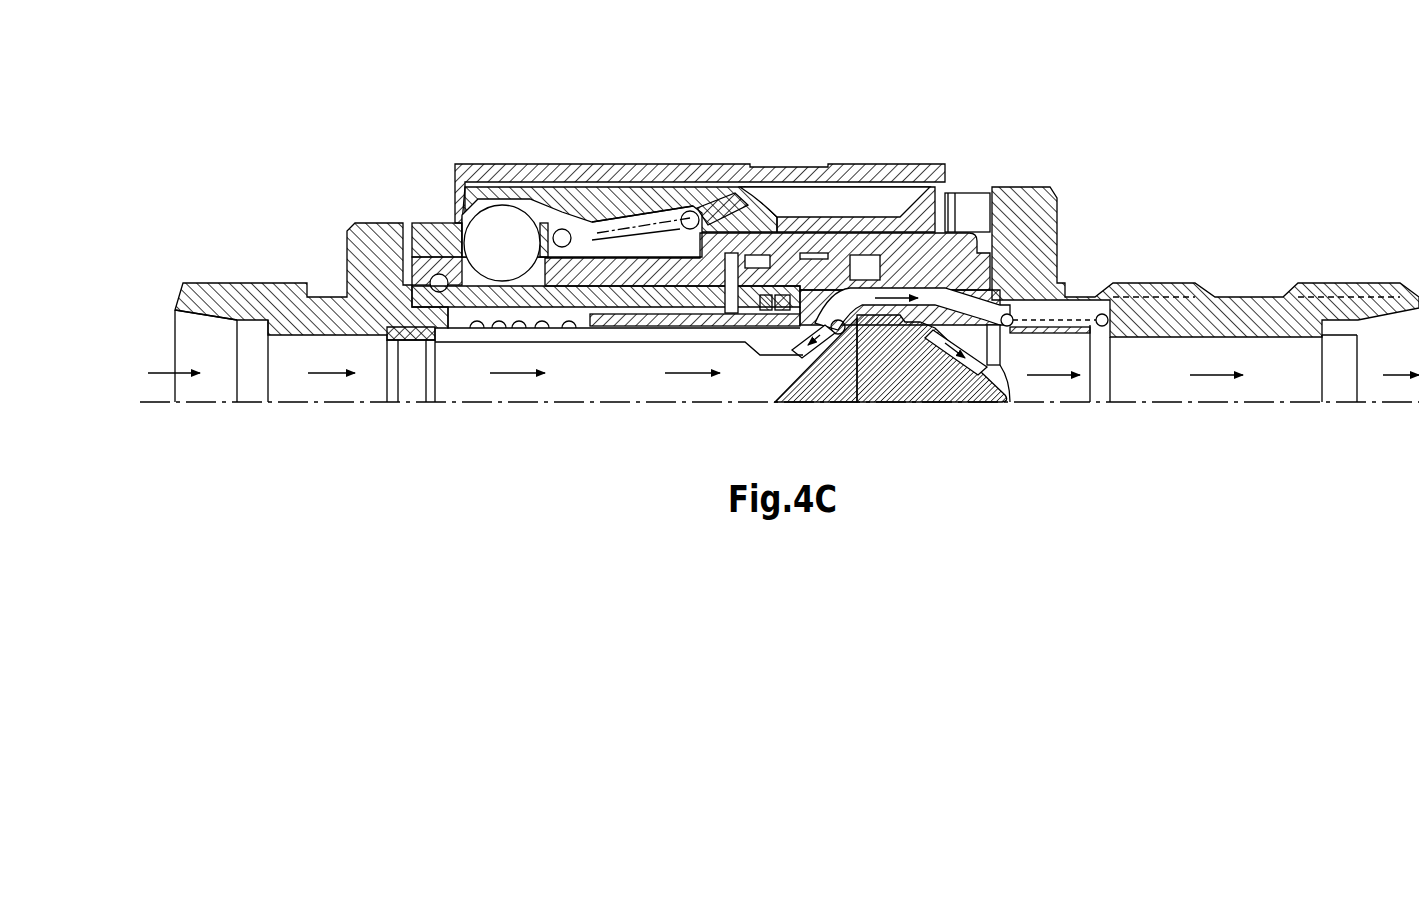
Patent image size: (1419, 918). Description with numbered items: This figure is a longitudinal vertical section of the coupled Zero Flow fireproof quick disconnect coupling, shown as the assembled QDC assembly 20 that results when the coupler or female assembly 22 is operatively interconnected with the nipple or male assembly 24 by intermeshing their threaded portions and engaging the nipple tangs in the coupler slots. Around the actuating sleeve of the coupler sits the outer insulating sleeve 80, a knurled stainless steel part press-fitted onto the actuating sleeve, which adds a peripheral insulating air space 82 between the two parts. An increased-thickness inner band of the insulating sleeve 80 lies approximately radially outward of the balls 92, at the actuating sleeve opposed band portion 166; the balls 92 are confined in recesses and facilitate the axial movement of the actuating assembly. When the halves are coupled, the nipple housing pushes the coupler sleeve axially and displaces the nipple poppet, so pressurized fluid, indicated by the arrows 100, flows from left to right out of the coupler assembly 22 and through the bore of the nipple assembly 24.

The Zero Flow FP QDC assembly 20 is at (695, 130).
The coupler or female assembly 22 is at (374, 220).
The nipple or male assembly 24 is at (1027, 183).
The insulating sleeve 80 is at (553, 173).
The peripheral insulating air space 82 is at (840, 197).
The balls or spheres 92 is at (490, 243).
The actuating sleeve opposed band portion 166 is at (508, 165).
The arrows indicating axial flow of pressurized fluid 100 is at (165, 373).